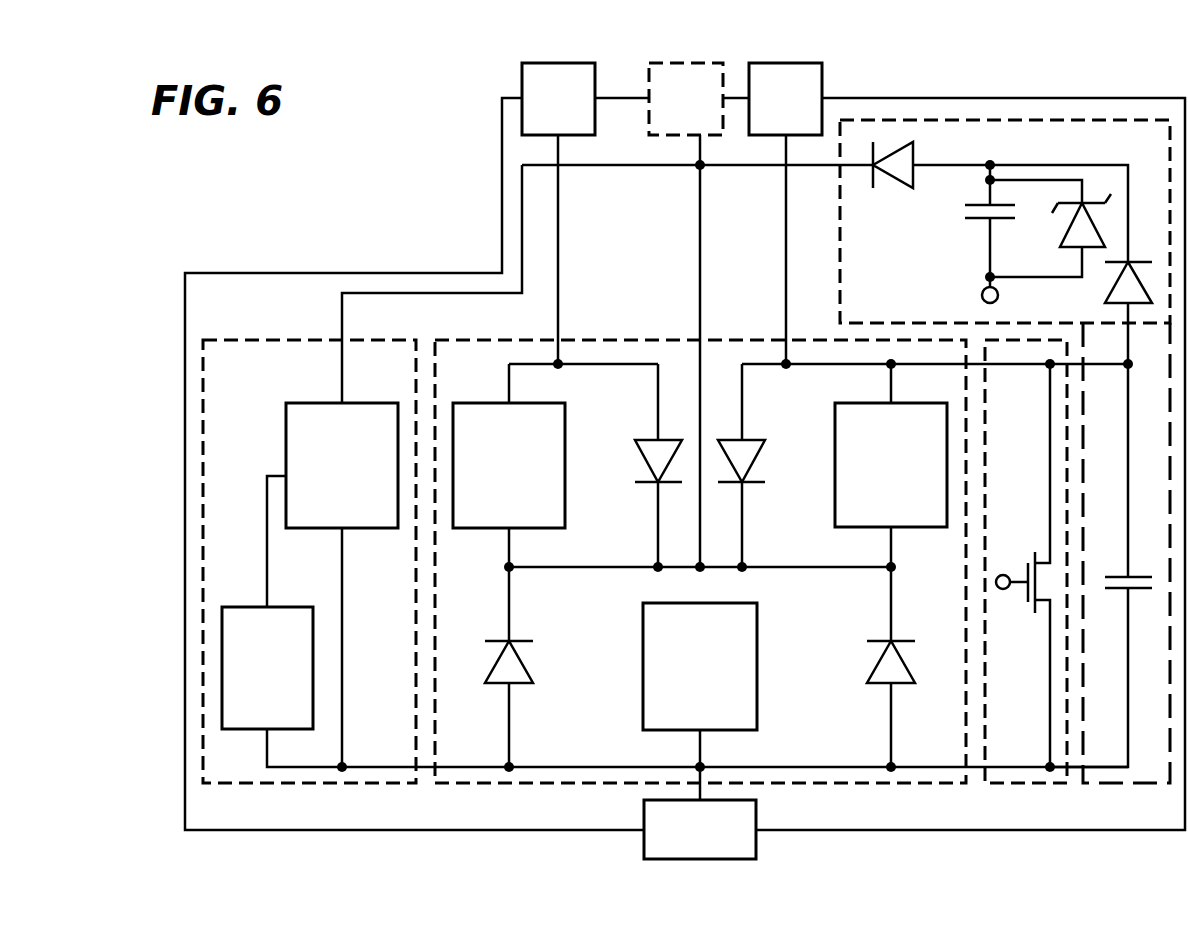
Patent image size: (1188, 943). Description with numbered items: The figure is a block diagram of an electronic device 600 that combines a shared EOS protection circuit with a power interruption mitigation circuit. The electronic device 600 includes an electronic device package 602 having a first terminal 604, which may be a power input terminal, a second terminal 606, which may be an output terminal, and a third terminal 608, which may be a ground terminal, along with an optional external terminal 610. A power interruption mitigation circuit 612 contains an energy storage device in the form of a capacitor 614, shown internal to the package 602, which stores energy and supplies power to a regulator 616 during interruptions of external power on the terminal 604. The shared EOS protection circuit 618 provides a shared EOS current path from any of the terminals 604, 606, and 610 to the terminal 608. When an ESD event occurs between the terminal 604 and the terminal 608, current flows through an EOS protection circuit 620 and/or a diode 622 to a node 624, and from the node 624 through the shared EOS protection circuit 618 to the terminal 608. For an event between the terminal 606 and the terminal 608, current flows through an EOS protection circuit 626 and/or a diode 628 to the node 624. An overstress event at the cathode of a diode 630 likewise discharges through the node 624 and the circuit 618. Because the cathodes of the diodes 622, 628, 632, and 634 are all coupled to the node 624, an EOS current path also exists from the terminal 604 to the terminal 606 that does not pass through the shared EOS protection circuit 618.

The electronic device 600 is at (400, 175).
The electronic device package 602 is at (1062, 98).
The first terminal 604 is at (558, 99).
The second terminal 606 is at (785, 99).
The third terminal 608 is at (700, 829).
The external terminal 610 is at (686, 99).
The power interruption mitigation circuit 612 is at (1005, 193).
The capacitor 614 is at (965, 208).
The regulator 616 is at (342, 465).
The shared EOS protection circuit 618 is at (700, 666).
The EOS protection circuit 620 is at (509, 465).
The diode 622 is at (648, 458).
The node 624 is at (782, 566).
The EOS protection circuit 626 is at (891, 465).
The diode 628 is at (750, 445).
The diode 630 is at (899, 150).
The diode 632 is at (527, 665).
The diode 634 is at (873, 667).